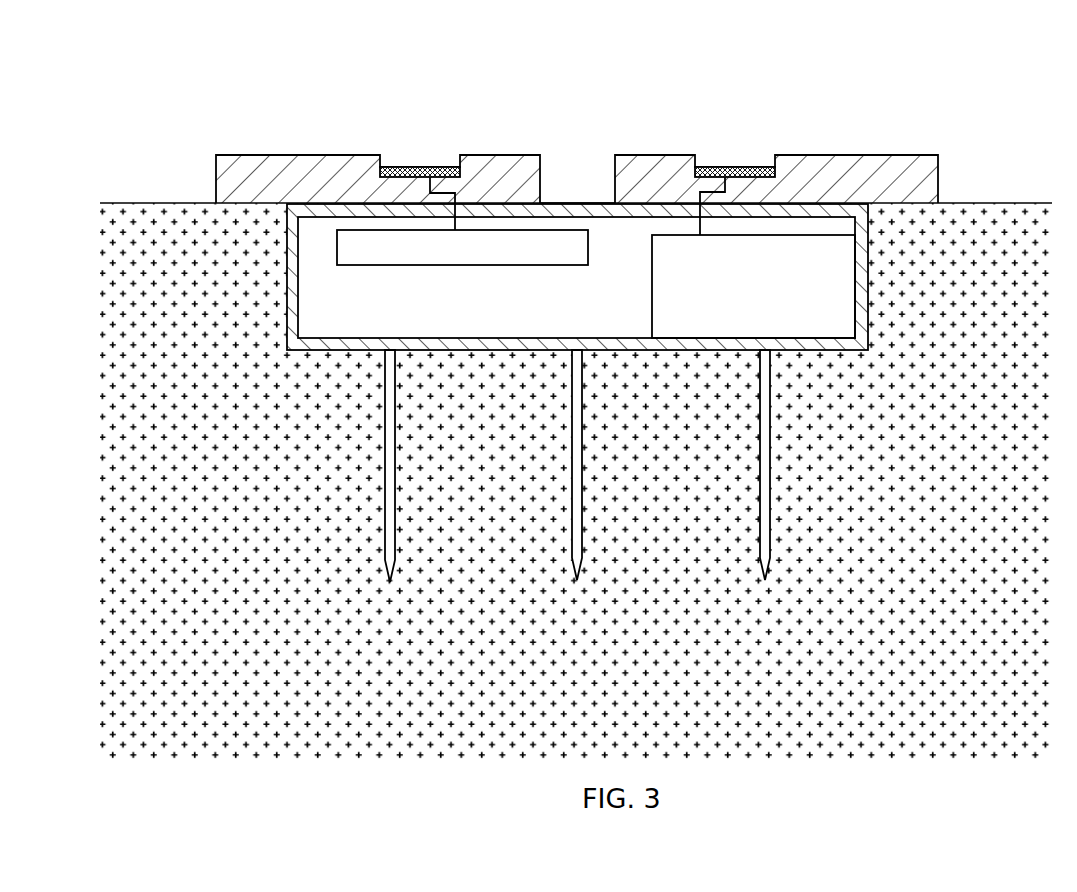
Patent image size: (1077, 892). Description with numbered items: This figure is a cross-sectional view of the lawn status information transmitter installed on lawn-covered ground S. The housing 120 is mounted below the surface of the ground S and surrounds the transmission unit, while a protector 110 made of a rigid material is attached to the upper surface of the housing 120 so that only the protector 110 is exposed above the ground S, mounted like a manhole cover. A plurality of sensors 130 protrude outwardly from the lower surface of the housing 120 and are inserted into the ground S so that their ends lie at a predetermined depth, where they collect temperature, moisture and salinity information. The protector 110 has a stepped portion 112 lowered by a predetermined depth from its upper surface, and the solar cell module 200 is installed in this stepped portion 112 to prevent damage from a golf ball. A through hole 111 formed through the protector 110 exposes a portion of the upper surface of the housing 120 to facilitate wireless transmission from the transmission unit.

The protector 110 is at (872, 170).
The through hole 111 is at (570, 179).
The stepped portion 112 is at (429, 154).
The solar cell module 200 is at (745, 167).
The housing 120 is at (865, 295).
The sensors 130 is at (763, 458).
The ground S is at (987, 232).